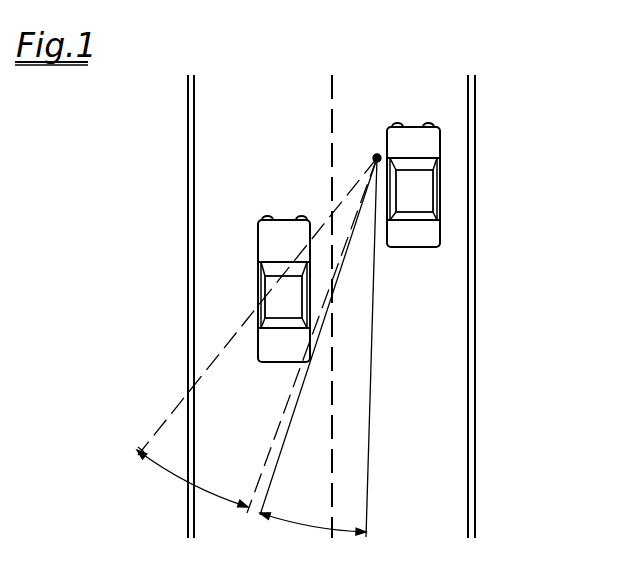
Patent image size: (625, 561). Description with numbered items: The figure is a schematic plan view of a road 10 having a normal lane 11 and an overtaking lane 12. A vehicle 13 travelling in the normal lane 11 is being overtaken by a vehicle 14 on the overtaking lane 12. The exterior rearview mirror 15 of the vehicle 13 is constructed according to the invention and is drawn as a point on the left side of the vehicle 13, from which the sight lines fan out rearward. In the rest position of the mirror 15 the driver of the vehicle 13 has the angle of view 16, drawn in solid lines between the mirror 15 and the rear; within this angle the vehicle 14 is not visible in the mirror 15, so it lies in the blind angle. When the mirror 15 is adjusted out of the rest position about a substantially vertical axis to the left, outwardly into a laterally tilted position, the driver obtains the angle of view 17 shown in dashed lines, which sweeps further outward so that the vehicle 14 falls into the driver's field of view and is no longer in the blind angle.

The road 10 is at (467, 368).
The normal lane 11 is at (423, 283).
The overtaking lane 12 is at (215, 287).
The vehicle 13 is at (420, 185).
The vehicle 14 is at (268, 240).
The exterior rearview mirror 15 is at (380, 156).
The angle of view 16 is at (313, 517).
The angle of view 17 is at (192, 478).